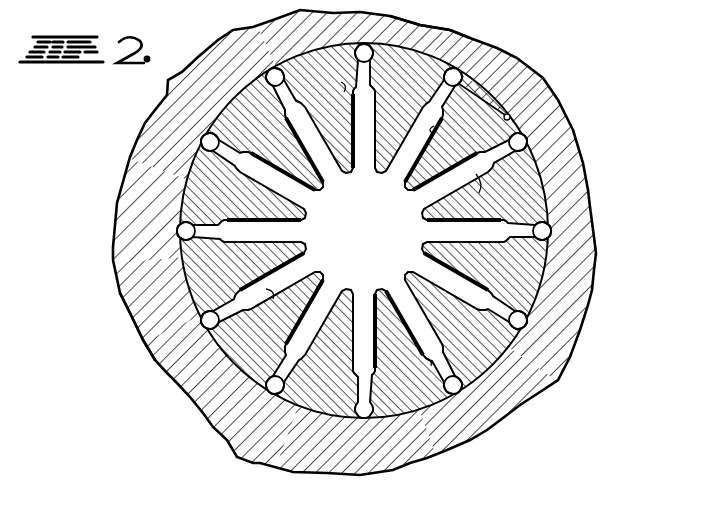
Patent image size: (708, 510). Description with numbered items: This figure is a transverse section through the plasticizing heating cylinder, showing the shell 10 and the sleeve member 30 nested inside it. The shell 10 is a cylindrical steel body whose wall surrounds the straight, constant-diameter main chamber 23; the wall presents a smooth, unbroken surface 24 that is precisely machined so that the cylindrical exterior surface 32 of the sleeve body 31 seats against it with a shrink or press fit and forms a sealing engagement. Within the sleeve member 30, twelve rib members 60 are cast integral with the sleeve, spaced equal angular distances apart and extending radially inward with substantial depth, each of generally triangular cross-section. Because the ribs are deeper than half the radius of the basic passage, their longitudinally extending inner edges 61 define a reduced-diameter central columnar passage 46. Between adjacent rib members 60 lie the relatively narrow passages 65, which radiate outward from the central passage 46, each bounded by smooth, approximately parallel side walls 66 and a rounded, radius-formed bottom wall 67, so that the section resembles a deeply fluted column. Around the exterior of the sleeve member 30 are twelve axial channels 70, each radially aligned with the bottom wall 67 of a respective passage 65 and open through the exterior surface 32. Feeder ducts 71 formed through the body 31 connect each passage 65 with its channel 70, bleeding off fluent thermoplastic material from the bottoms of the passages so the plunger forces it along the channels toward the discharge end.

The shell 10 is at (537, 82).
The main chamber 23 is at (491, 86).
The surface 24 is at (512, 118).
The sleeve member 30 is at (543, 200).
The body 31 is at (547, 268).
The cylindrical exterior surface 32 is at (440, 33).
The central passage 46 is at (402, 247).
The rib members 60 is at (340, 148).
The inner edges 61 is at (382, 298).
The passages 65 is at (482, 217).
The side walls 66 is at (432, 131).
The bottom wall 67 is at (342, 88).
The channels 70 is at (356, 40).
The feeder ducts 71 is at (213, 150).